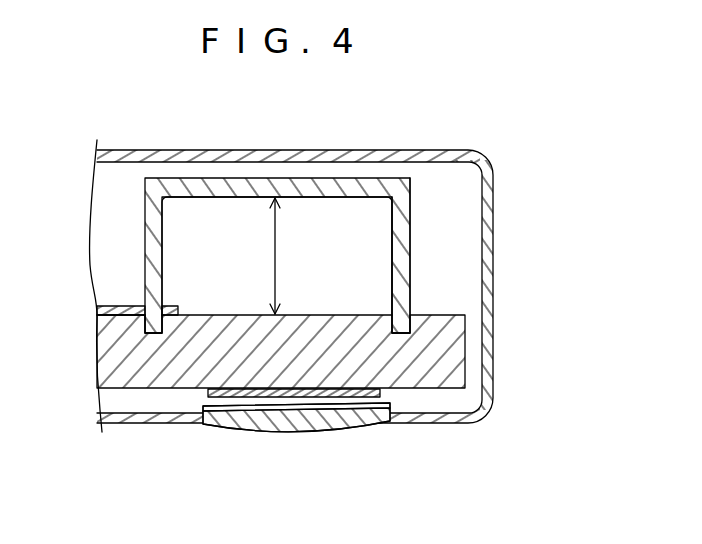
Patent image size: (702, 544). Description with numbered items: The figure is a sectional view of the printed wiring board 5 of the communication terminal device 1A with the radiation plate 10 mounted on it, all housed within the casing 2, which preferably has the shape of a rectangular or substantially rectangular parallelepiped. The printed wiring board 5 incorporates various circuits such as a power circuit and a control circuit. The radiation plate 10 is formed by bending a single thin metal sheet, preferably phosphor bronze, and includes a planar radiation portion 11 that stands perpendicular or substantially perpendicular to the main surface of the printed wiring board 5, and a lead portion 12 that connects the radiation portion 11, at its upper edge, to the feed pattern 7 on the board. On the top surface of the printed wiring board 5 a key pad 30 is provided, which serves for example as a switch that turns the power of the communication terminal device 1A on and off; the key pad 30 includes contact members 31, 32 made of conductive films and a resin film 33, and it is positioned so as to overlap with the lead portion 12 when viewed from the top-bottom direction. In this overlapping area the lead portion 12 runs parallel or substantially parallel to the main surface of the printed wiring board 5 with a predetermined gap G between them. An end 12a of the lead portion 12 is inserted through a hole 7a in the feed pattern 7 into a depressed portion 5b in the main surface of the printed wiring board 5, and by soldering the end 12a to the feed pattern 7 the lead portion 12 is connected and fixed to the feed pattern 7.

The communication terminal device 1A is at (148, 111).
The casing 2 is at (437, 149).
The printed wiring board 5 is at (248, 326).
The depressed portion 5b is at (153, 334).
The feed pattern 7 is at (118, 306).
The hole 7a is at (163, 306).
The radiation plate 10 is at (313, 255).
The radiation portion 11 is at (411, 264).
The lead portion 12 is at (210, 198).
The end of the lead portion 12a is at (95, 325).
The gap G is at (285, 256).
The key pad 30 is at (293, 453).
The contact member 31 is at (227, 441).
The contact member 32 is at (320, 397).
The resin film 33 is at (362, 431).